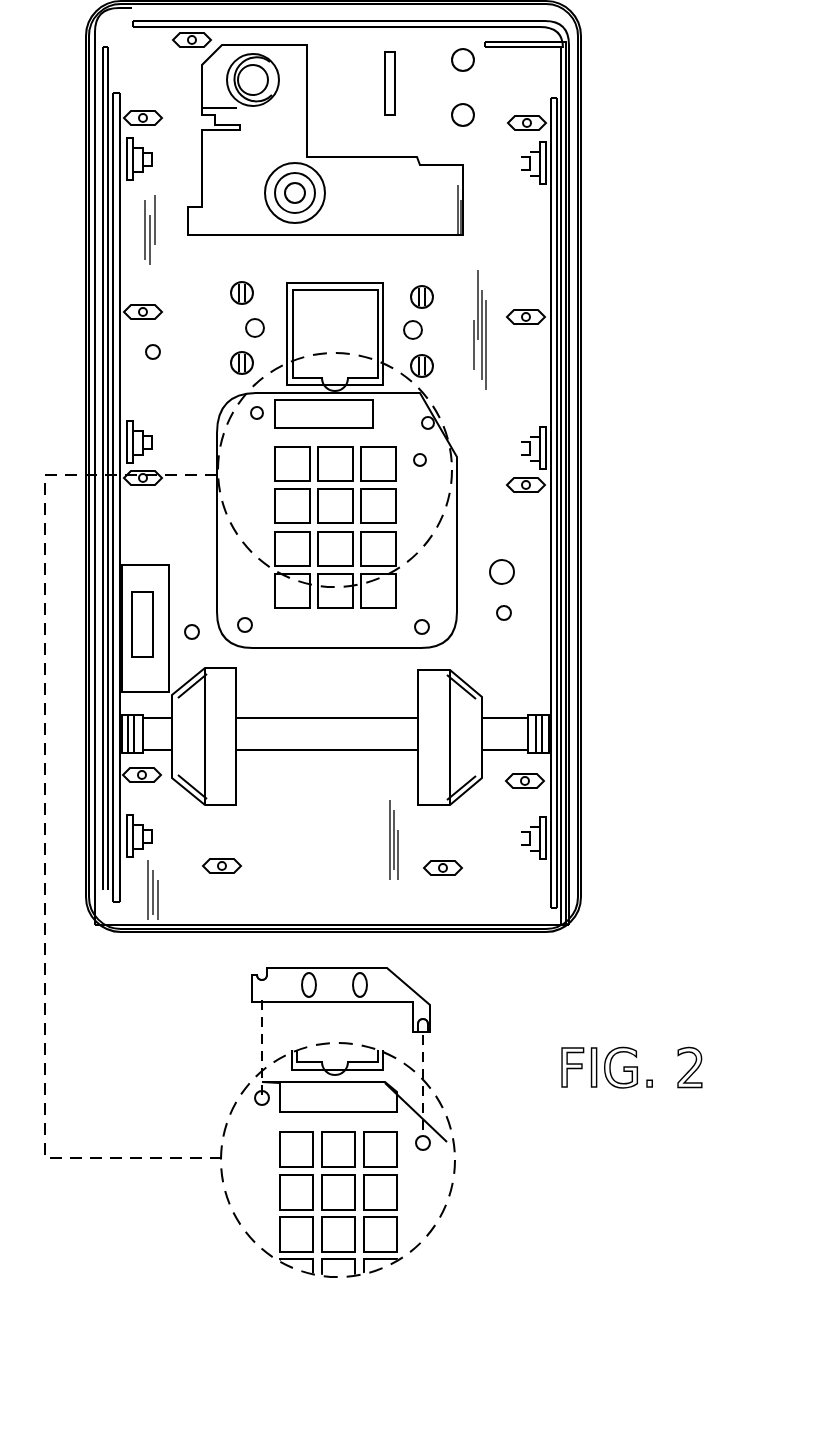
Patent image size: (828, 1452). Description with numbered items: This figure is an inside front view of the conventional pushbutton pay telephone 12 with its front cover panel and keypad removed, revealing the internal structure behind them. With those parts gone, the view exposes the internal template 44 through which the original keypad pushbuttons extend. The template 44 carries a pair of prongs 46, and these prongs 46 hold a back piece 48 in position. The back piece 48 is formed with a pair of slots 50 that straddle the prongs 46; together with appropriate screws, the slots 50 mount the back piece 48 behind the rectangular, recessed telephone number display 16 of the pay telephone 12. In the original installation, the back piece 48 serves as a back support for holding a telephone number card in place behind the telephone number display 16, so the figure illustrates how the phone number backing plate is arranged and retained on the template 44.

The pay telephone 12 is at (583, 172).
The telephone number display 16 is at (376, 417).
The internal template 44 is at (460, 528).
The prongs 46 is at (251, 413).
The back piece 48 is at (415, 993).
The slots 50 is at (262, 975).